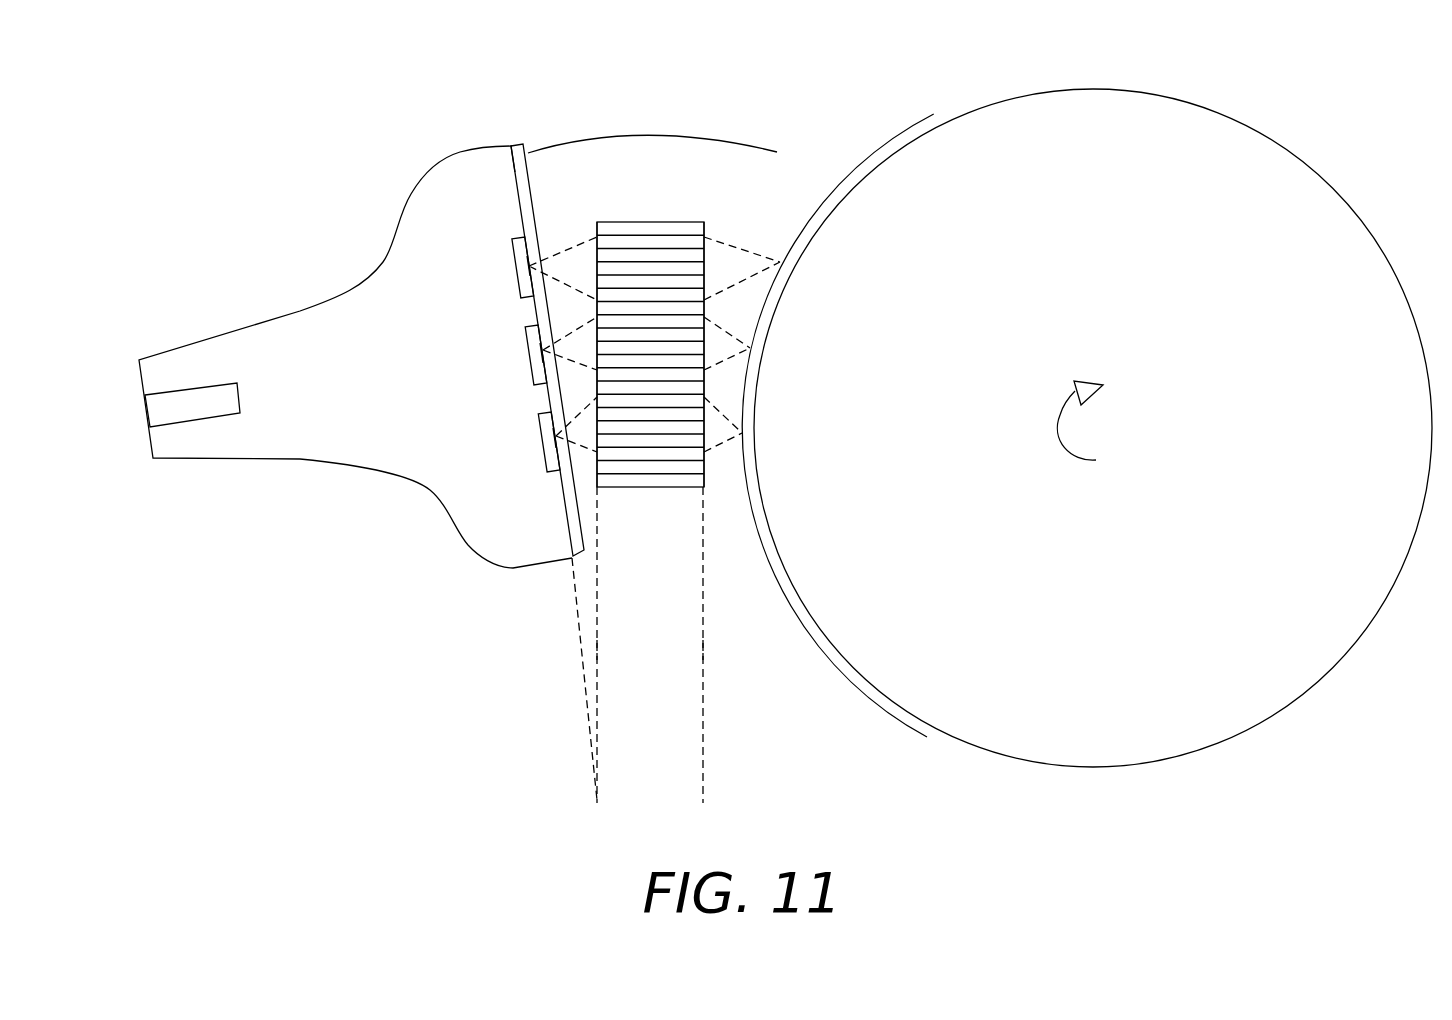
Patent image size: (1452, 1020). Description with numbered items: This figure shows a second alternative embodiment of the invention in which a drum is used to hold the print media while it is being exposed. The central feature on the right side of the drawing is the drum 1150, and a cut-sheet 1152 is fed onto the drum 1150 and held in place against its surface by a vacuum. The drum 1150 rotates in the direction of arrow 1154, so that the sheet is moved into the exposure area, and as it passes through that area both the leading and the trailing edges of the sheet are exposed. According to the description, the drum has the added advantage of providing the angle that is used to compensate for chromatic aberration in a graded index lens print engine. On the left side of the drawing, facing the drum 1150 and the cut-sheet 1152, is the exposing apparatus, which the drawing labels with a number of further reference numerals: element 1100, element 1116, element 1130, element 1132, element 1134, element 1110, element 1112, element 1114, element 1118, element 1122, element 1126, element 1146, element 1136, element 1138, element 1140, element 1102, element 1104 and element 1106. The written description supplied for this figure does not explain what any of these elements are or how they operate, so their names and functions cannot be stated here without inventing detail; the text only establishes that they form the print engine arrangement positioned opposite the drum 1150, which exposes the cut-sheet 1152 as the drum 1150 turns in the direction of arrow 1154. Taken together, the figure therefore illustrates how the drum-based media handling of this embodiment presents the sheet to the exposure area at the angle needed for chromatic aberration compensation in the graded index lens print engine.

The print head housing 1100 is at (397, 214).
The connector 1116 is at (238, 400).
The substrate plate 1130 is at (522, 143).
The mounting edge 1132 is at (510, 170).
The cover arc 1134 is at (655, 138).
The first light emitter 1110 is at (512, 255).
The second light emitter 1112 is at (527, 343).
The third light emitter 1114 is at (543, 432).
The first detector 1118 is at (527, 268).
The second detector 1122 is at (542, 353).
The third detector 1126 is at (558, 438).
The lens array 1146 is at (643, 222).
The lens array input surface 1136 is at (597, 252).
The lens array output surface 1138 is at (705, 252).
The lens array width 1140 is at (710, 567).
The tilt angle 1102 is at (580, 641).
The left spacing 1104 is at (597, 645).
The right spacing 1106 is at (703, 645).
The drum 1150 is at (880, 167).
The cut-sheet 1152 is at (910, 128).
The arrow 1154 is at (1058, 423).